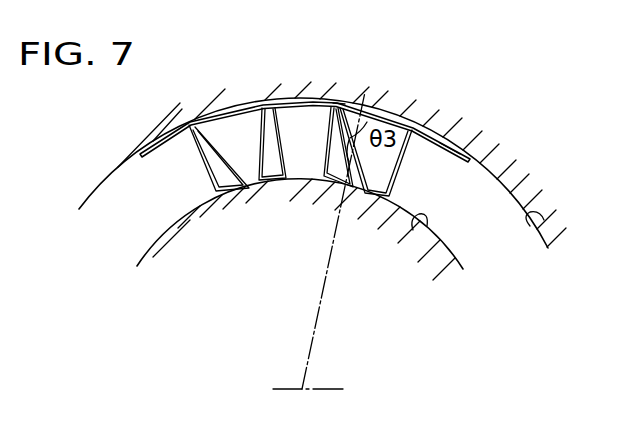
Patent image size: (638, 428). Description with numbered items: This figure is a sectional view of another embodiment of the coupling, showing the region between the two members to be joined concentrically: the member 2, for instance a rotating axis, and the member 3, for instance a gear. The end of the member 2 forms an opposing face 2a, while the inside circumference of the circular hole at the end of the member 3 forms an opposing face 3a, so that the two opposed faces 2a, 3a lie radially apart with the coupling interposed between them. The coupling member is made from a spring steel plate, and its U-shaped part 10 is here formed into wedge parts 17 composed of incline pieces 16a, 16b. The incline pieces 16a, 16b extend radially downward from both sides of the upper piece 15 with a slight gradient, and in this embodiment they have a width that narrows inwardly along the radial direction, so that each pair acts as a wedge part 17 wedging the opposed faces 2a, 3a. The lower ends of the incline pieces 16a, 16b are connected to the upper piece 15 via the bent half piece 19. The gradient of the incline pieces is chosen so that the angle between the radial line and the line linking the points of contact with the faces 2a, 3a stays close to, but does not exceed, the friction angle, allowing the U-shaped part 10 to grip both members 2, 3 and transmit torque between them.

The member 2 is at (468, 272).
The opposing face 2a is at (413, 230).
The member 3 is at (502, 155).
The opposing face 3a is at (530, 226).
The U-shaped part 10 is at (337, 151).
The upper piece 15 is at (217, 114).
The incline piece 16a is at (301, 184).
The incline piece 16b is at (397, 180).
The wedge part 17 is at (343, 103).
The bent half piece 19 is at (314, 100).